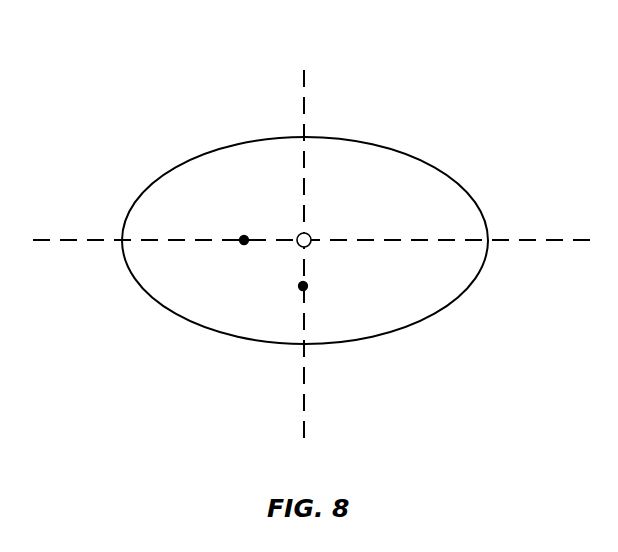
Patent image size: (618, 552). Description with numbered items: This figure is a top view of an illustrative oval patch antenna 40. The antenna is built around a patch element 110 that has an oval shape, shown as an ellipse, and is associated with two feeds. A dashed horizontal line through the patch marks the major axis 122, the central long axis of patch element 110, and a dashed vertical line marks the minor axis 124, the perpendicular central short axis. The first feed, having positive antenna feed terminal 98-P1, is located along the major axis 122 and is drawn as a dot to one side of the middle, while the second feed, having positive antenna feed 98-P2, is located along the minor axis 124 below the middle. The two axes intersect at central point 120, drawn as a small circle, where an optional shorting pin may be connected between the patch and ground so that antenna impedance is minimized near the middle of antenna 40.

The patch antenna 40 is at (500, 78).
The patch element 110 is at (405, 153).
The central point 120 is at (309, 236).
The major axis 122 is at (43, 242).
The minor axis 124 is at (304, 75).
The positive antenna feed terminal 98-P1 is at (244, 236).
The positive antenna feed 98-P2 is at (307, 288).